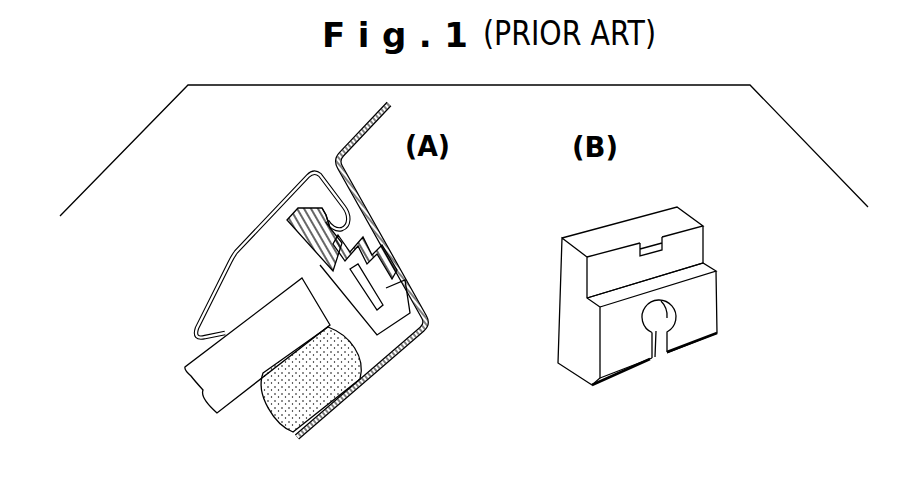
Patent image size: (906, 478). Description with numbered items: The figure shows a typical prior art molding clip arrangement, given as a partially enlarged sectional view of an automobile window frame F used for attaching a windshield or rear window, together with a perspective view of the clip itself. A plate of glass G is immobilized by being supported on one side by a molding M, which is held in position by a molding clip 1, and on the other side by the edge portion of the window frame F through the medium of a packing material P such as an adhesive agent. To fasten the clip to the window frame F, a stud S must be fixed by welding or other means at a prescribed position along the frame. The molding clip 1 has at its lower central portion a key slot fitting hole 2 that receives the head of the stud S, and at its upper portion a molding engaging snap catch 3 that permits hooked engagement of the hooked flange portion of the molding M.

The molding clip 1 is at (352, 268).
The key slot fitting hole 2 is at (398, 297).
The molding engaging snap catch 3 is at (316, 210).
The window frame F is at (358, 130).
The molding M is at (255, 227).
The stud S is at (383, 273).
The plate of glass G is at (223, 393).
The packing material P is at (311, 405).